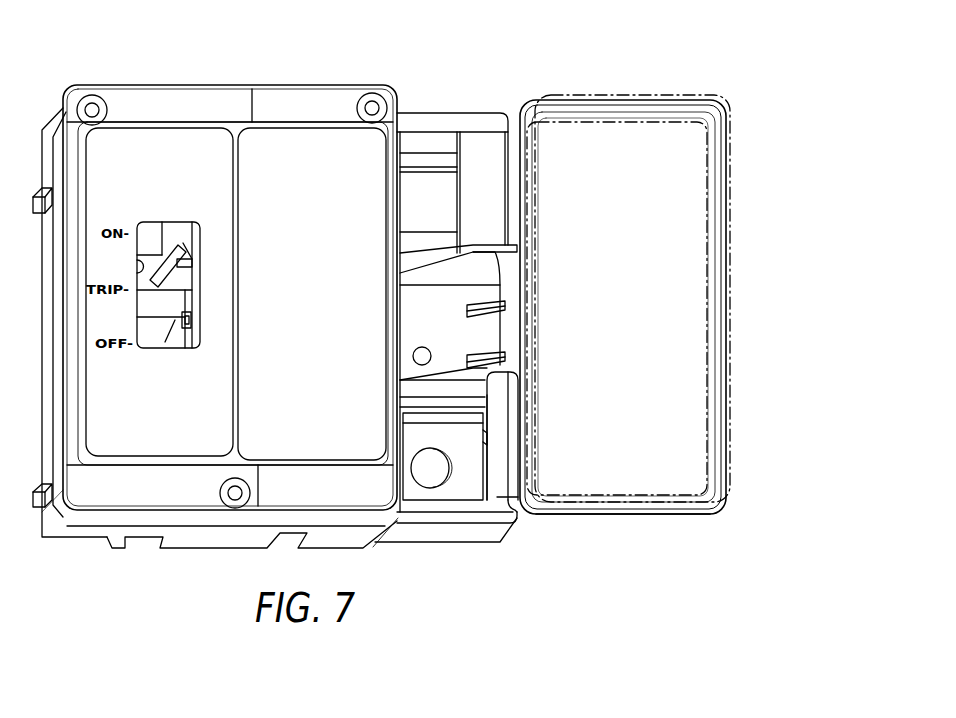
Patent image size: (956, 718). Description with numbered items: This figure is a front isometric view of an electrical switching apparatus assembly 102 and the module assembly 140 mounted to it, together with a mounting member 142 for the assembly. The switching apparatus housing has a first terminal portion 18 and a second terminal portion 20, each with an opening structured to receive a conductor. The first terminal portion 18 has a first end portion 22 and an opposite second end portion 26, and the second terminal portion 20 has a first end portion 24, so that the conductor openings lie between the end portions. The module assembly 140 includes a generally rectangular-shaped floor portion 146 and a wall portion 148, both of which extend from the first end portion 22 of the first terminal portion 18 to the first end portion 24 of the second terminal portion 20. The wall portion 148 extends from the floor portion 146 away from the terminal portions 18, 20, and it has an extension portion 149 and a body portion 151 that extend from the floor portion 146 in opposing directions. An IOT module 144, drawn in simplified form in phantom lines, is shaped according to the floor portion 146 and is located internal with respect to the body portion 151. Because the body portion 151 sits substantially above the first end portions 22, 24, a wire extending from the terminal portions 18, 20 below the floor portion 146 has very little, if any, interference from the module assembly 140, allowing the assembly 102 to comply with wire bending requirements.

The electrical switching apparatus assembly 102 is at (624, 76).
The body portion 151 is at (673, 122).
The IOT module 144 is at (730, 187).
The floor portion 146 is at (690, 397).
The wall portion 148 is at (662, 515).
The extension portion 149 is at (510, 327).
The second terminal portion 20 is at (427, 147).
The first end portion of the second terminal portion 24 is at (478, 120).
The first end portion of the first terminal portion 22 is at (473, 515).
The first terminal portion 18 is at (452, 533).
The second end portion of the first terminal portion 26 is at (420, 547).
The mounting member 142 is at (533, 526).
The module assembly 140 is at (531, 546).